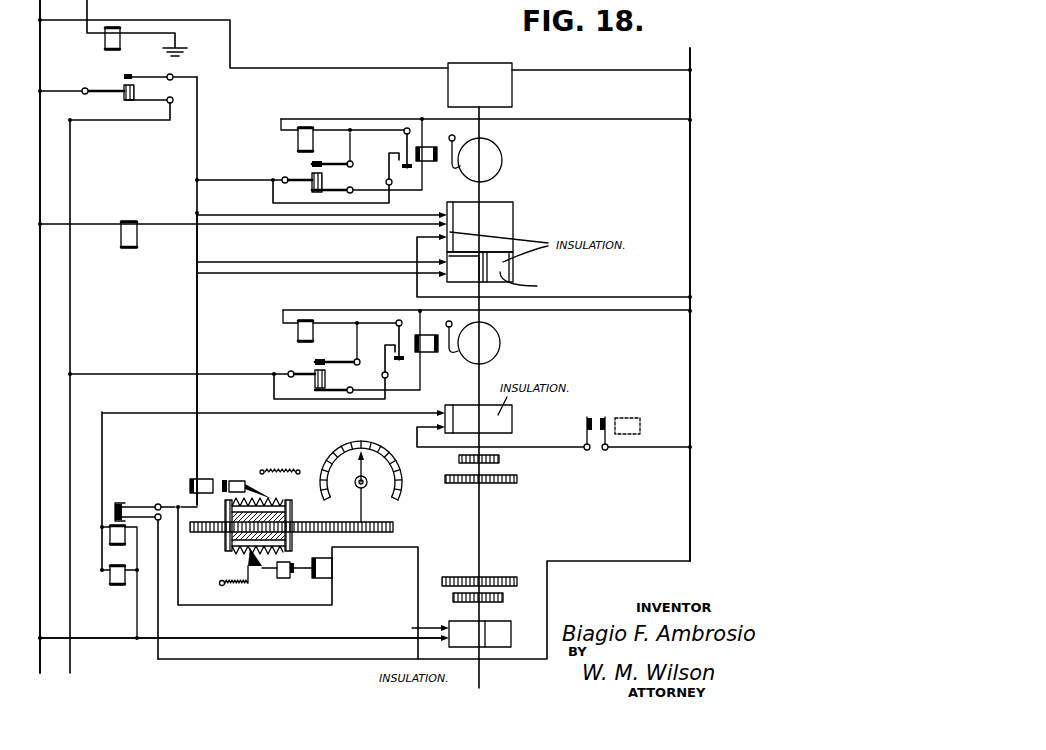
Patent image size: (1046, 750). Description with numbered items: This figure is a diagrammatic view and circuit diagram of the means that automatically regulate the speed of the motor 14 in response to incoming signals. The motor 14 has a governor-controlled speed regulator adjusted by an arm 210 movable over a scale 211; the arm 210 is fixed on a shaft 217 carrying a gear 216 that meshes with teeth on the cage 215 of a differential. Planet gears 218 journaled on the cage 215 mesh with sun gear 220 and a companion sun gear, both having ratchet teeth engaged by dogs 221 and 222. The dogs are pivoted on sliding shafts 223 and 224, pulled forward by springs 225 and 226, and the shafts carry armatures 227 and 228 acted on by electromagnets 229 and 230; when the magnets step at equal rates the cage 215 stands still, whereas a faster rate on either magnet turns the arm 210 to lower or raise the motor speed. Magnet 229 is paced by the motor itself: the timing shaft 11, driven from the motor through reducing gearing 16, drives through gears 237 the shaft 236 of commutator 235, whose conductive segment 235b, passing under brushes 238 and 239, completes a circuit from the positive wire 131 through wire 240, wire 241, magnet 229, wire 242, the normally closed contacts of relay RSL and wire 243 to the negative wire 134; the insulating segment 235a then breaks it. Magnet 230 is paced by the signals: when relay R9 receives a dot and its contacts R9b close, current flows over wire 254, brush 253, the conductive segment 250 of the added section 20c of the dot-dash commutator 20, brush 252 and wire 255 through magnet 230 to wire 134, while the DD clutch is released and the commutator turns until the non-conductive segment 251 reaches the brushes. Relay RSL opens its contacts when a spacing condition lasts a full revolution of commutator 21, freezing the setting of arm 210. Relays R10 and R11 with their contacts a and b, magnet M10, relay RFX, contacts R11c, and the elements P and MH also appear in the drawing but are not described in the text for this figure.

The relay R9 is at (104, 45).
The contacts R9b is at (124, 79).
The wire 254 is at (196, 156).
The motor 14 is at (512, 92).
The relay R10 is at (297, 140).
The relay contact b is at (313, 366).
The relay contact a is at (335, 383).
The magnet M10 is at (431, 162).
The clutch DD is at (490, 158).
The commutator 20 is at (509, 231).
The added commutator section 20c is at (513, 269).
The non-conductive segment 251 is at (532, 284).
The brush 253 is at (445, 262).
The brush 252 is at (445, 274).
The conductive segment 250 is at (457, 275).
The negative wire 134 is at (692, 208).
The positive wire 131 is at (41, 323).
The relay RFX is at (128, 249).
The wire 255 is at (196, 310).
The relay R11 is at (653, 412).
The motor P is at (488, 342).
The commutator 21 is at (512, 420).
The relay R11 contacts c R11c is at (603, 420).
The reducing gearing 16 is at (460, 468).
The arm 210 is at (368, 465).
The scale 211 is at (351, 447).
The shaft 217 is at (366, 512).
The gear 216 is at (394, 527).
The timing shaft 11 is at (481, 541).
The planet gears 218 is at (295, 522).
The electromagnet 230 is at (190, 480).
The armature 228 is at (227, 480).
The sliding shaft 224 is at (243, 480).
The dog 222 is at (273, 487).
The spring 226 is at (277, 468).
The sun gear 220 is at (290, 500).
The cage 215 is at (192, 520).
The dog 221 is at (252, 556).
The sliding shaft 223 is at (280, 578).
The spring 225 is at (218, 590).
The armature 227 is at (297, 582).
The electromagnet 229 is at (332, 570).
The wire 241 is at (374, 550).
The gears 237 is at (452, 597).
The brush 239 is at (430, 628).
The brush 238 is at (440, 637).
The commutator 235 is at (512, 640).
The shaft 236 is at (478, 614).
The insulating segment 235a is at (466, 644).
The conductive segment 235b is at (500, 644).
The relay RSL is at (110, 541).
The magnet MH is at (109, 582).
The wire 242 is at (237, 607).
The wire 240 is at (216, 640).
The wire 243 is at (308, 661).